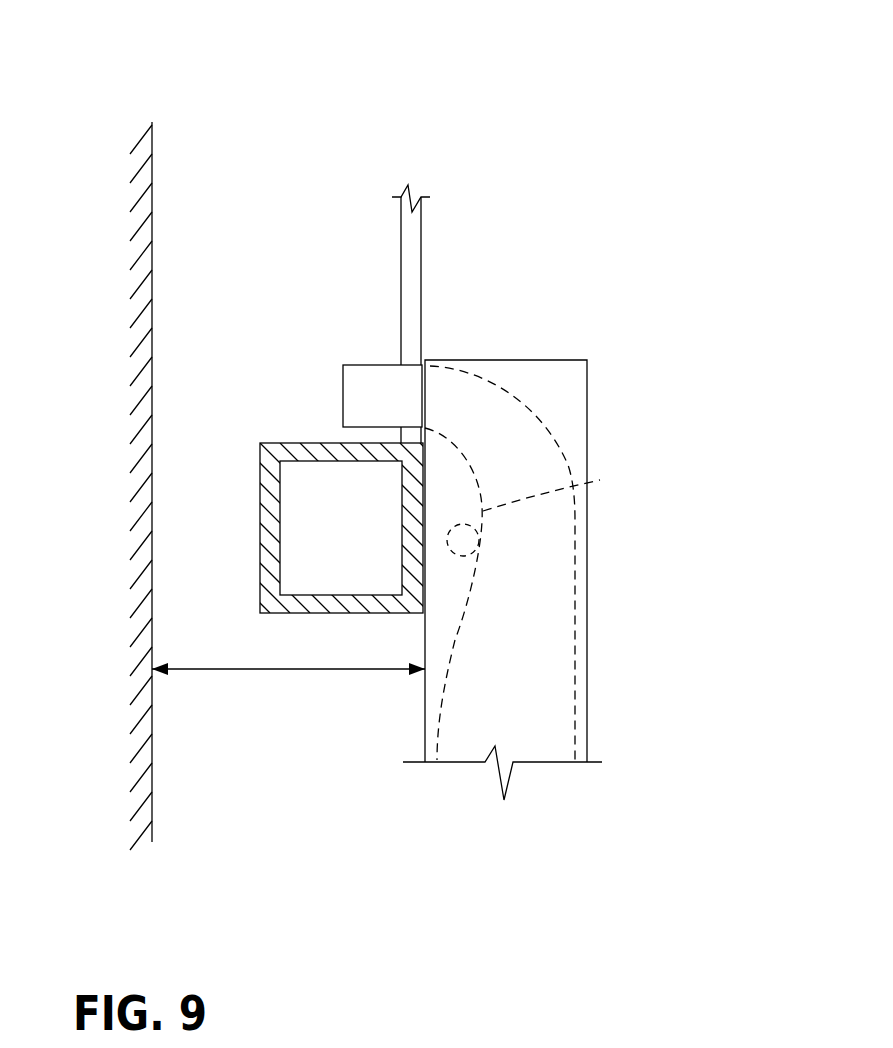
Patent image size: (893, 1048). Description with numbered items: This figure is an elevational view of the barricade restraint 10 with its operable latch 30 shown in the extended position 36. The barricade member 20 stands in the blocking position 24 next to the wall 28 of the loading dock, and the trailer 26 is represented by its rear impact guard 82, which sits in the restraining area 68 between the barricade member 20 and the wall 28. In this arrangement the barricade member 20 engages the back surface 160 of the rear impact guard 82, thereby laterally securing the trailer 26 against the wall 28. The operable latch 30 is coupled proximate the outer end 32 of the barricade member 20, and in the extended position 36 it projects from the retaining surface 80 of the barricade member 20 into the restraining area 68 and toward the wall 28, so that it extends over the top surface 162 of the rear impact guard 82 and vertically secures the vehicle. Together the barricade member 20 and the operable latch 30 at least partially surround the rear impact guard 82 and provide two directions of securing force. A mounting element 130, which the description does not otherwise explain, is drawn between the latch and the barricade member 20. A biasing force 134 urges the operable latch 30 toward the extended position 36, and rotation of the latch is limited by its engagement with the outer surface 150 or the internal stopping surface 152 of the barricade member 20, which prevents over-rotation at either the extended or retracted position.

The barricade restraint 10 is at (650, 447).
The barricade member 20 is at (535, 710).
The blocking position 24 is at (633, 540).
The trailer 26 is at (378, 218).
The wall 28 is at (152, 175).
The operable latch 30 is at (360, 312).
The outer end 32 is at (548, 397).
The extended position 36 is at (338, 333).
The restraining area 68 is at (273, 672).
The retaining surface 80 is at (425, 705).
The rear impact guard 82 is at (258, 503).
The bracket 130 is at (343, 388).
The biasing force 134 is at (380, 330).
The outer surface 150 is at (587, 679).
The internal stopping surface 152 is at (678, 496).
The back surface 160 is at (425, 563).
The top surface 162 is at (277, 443).